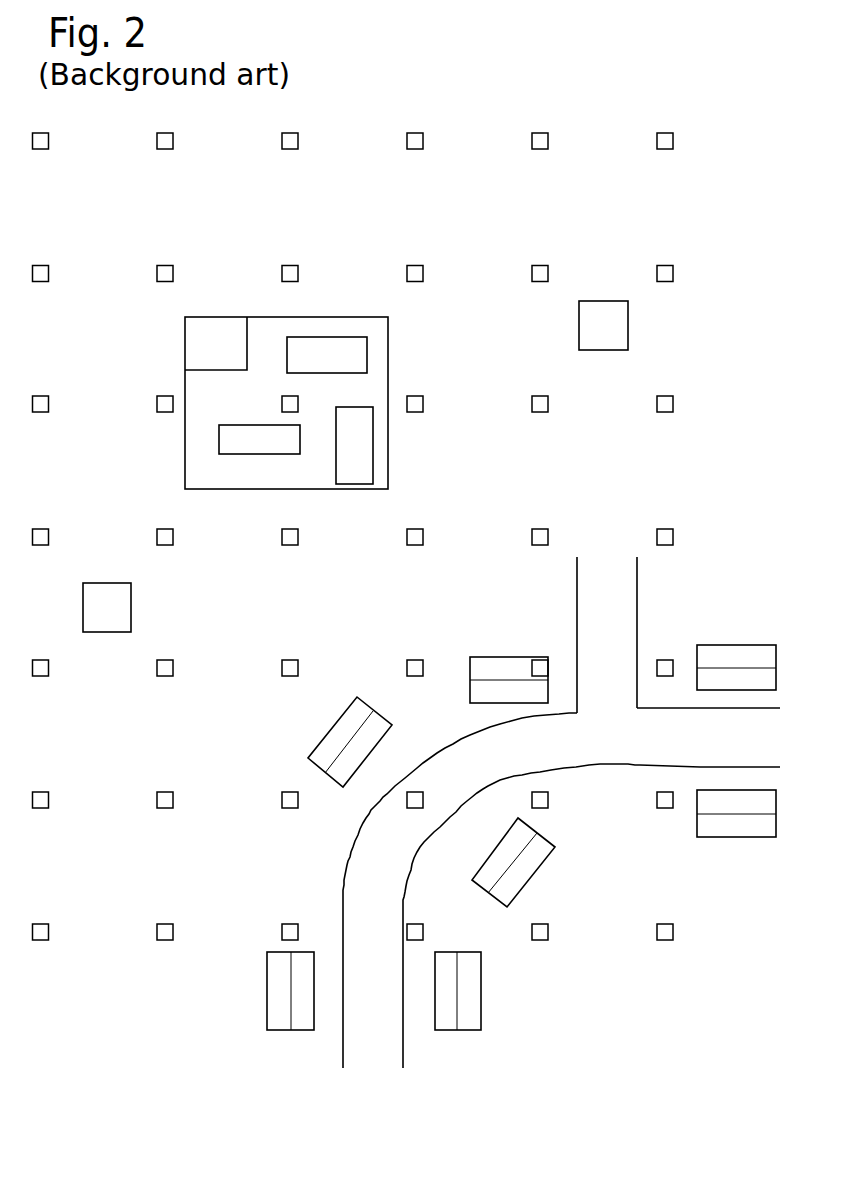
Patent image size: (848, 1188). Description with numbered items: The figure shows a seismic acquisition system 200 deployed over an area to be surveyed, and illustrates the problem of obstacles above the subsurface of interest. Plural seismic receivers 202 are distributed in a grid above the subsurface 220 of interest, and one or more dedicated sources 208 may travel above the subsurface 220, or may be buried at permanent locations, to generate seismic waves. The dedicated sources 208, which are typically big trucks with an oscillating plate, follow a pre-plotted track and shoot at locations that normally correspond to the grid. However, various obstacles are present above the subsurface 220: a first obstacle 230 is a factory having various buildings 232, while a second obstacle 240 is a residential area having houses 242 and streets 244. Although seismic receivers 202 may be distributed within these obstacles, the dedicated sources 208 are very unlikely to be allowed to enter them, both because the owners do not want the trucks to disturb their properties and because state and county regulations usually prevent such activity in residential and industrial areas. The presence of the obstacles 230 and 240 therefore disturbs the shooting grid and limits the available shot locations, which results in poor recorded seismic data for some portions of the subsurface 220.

The acquisition system 200 is at (397, 64).
The seismic receivers 202 is at (413, 265).
The dedicated sources 208 is at (604, 301).
The subsurface 220 is at (362, 629).
The obstacle 230 is at (286, 406).
The buildings 232 is at (212, 342).
The obstacle 240 is at (561, 812).
The houses 242 is at (497, 657).
The streets 244 is at (643, 743).